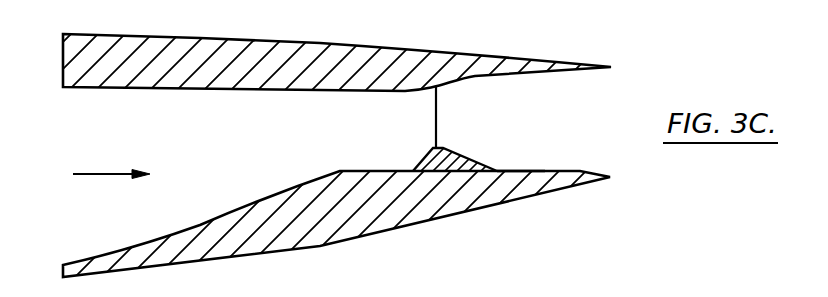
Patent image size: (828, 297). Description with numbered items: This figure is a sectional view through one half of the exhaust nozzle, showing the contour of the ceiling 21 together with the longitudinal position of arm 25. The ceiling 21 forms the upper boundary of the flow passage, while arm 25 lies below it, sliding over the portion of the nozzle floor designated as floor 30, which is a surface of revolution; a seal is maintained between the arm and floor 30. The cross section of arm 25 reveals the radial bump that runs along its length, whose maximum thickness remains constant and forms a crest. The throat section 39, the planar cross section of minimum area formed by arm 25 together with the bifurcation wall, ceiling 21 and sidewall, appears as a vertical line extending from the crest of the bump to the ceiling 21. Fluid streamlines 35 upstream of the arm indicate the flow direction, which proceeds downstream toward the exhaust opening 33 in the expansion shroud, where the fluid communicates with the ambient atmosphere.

The ceiling 21 is at (592, 76).
The exhaust opening 33 is at (612, 127).
The arm 25 is at (424, 153).
The throat section 39 is at (438, 111).
The floor 30 is at (532, 147).
The fluid streamlines 35 is at (93, 174).